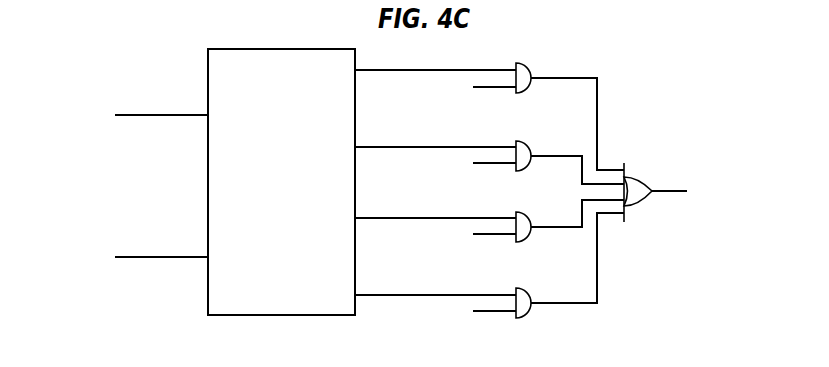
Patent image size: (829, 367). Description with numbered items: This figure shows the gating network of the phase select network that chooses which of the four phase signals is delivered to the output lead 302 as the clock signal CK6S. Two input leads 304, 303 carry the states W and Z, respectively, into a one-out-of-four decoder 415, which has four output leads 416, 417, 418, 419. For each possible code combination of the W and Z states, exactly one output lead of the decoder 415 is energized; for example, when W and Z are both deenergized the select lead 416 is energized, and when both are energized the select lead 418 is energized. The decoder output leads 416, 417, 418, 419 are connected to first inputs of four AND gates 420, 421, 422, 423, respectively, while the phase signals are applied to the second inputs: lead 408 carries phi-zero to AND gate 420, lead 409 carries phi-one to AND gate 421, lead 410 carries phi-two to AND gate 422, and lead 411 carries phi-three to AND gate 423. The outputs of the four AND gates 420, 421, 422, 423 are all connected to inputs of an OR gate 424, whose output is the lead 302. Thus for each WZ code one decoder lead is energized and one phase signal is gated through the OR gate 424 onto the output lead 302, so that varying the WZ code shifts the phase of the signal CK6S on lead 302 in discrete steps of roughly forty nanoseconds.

The one-out-of-four decoder 415 is at (267, 49).
The lead 304 is at (138, 115).
The lead 303 is at (140, 257).
The output lead 416 is at (463, 70).
The output lead 417 is at (462, 147).
The output lead 418 is at (464, 218).
The output lead 419 is at (462, 295).
The lead 408 is at (487, 88).
The lead 409 is at (487, 164).
The lead 410 is at (487, 235).
The lead 411 is at (487, 312).
The AND gate 420 is at (531, 69).
The AND gate 421 is at (531, 146).
The AND gate 422 is at (530, 217).
The AND gate 423 is at (530, 295).
The OR gate 424 is at (636, 177).
The lead 302 is at (667, 193).